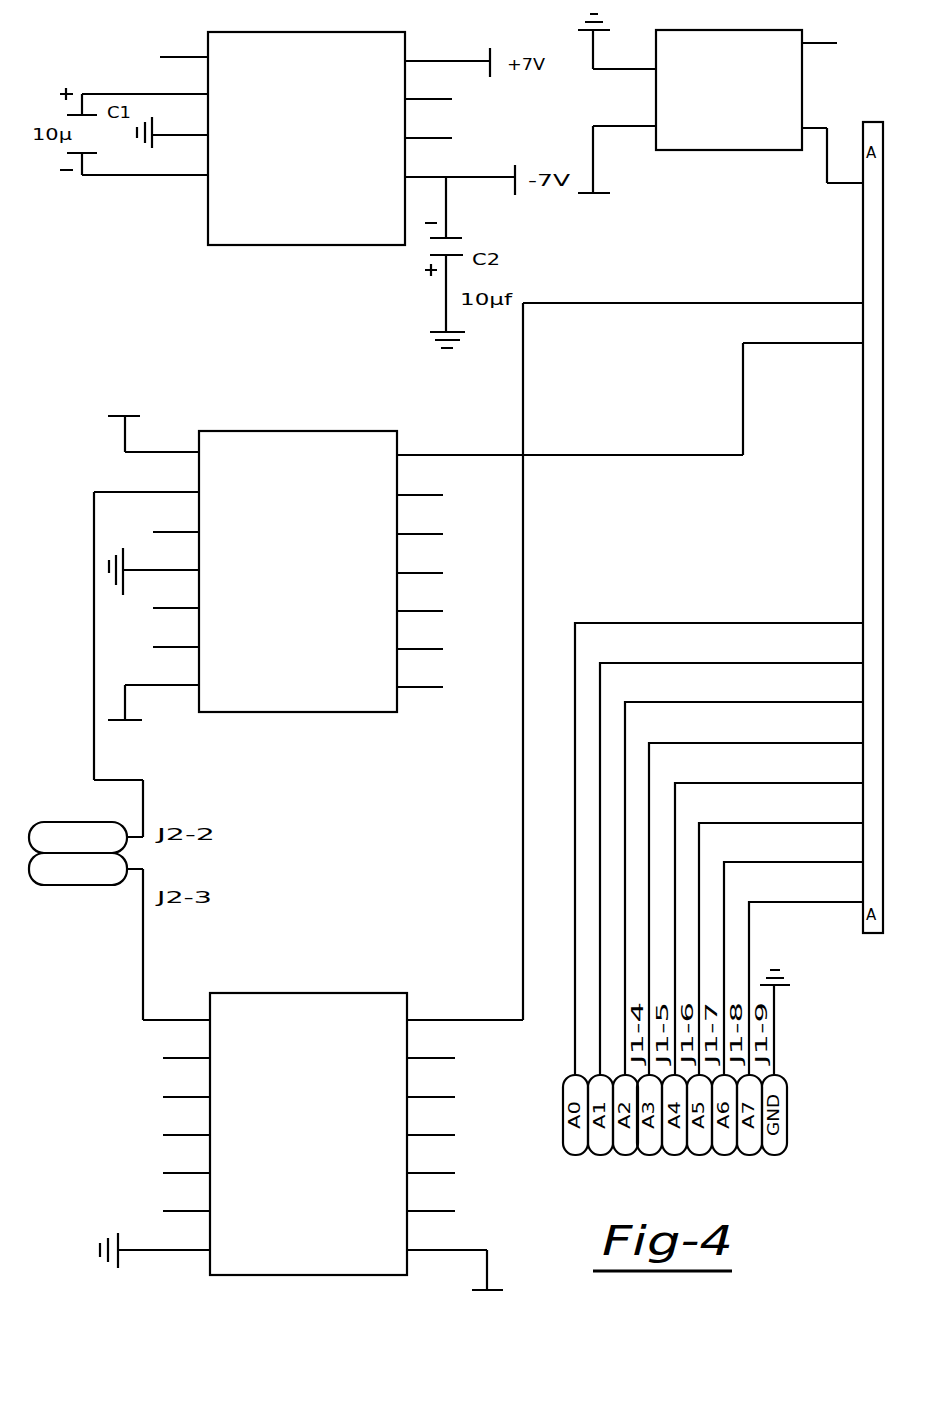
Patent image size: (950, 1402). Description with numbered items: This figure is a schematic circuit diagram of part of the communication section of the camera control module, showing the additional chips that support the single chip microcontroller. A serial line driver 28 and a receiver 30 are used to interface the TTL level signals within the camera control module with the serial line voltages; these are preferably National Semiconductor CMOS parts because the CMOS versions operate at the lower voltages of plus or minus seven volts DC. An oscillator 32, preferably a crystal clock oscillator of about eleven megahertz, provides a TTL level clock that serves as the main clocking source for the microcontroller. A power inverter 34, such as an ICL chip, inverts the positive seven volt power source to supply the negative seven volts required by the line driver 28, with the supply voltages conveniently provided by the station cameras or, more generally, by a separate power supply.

The serial line driver 28 is at (303, 712).
The receiver 30 is at (335, 1275).
The oscillator 32 is at (713, 150).
The power inverter 34 is at (243, 245).